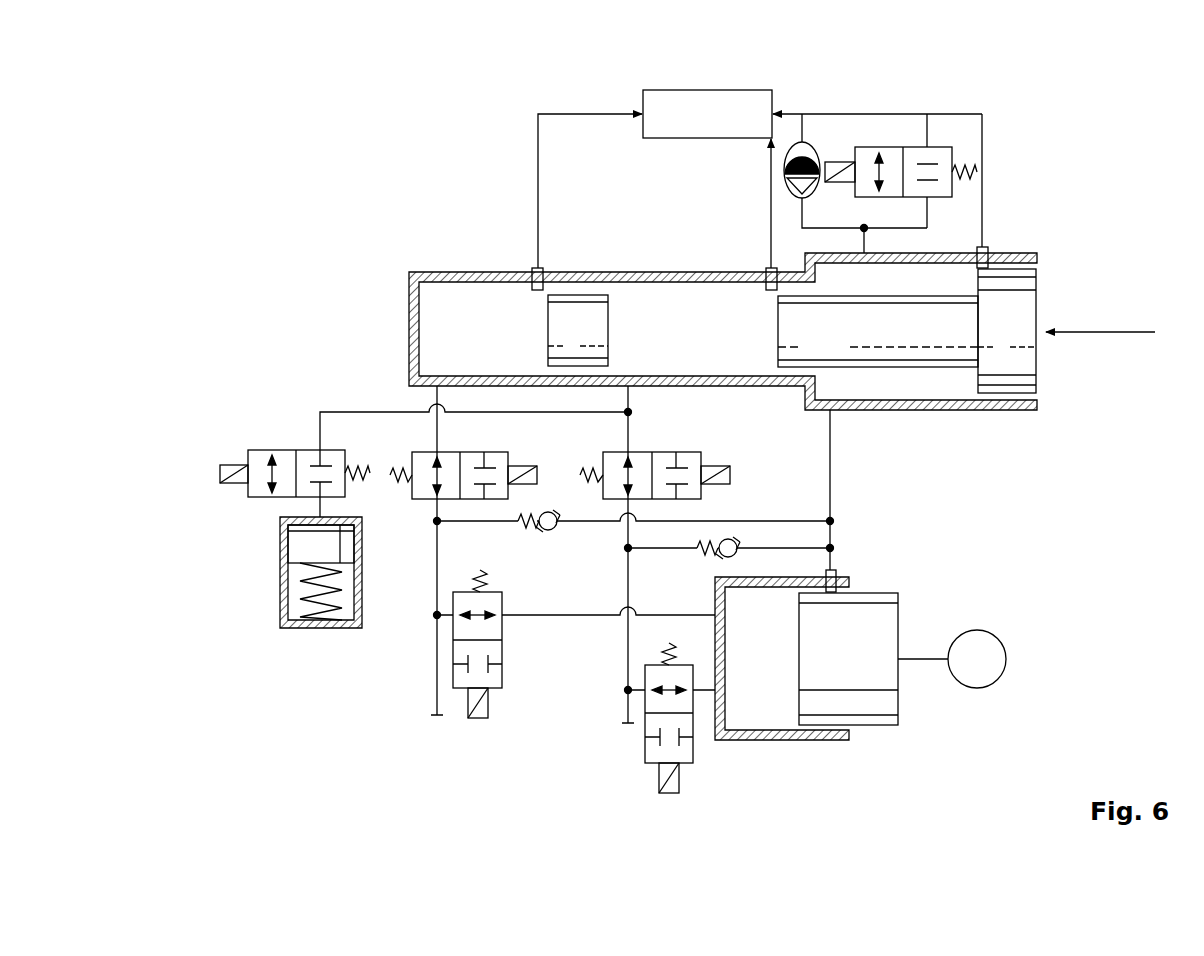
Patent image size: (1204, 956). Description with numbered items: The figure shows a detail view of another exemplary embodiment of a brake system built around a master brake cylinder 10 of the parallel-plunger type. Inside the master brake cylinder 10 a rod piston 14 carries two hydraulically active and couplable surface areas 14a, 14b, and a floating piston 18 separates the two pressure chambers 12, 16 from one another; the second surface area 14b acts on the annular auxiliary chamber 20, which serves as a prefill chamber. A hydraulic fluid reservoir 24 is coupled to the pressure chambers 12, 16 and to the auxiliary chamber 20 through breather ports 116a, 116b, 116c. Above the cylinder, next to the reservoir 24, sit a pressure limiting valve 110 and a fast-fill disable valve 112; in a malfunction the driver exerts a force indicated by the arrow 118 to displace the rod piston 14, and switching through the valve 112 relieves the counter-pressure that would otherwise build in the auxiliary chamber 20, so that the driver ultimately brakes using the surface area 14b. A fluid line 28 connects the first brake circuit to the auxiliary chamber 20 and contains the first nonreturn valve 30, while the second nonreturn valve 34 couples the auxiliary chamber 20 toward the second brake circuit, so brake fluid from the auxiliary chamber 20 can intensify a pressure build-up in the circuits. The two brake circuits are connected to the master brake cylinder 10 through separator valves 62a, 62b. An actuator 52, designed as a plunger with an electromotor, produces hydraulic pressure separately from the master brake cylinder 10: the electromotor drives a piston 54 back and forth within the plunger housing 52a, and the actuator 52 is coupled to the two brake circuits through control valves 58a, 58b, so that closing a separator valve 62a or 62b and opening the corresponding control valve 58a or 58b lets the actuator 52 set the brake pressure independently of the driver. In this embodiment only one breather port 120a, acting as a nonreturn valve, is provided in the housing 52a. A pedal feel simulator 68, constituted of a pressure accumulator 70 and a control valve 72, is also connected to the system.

The master brake cylinder 10 is at (445, 273).
The pressure chamber 12 is at (690, 286).
The rod piston 14 is at (1033, 303).
The hydraulically active surface area 14a is at (776, 368).
The second hydraulically active surface area 14b is at (965, 378).
The pressure chamber 16 is at (420, 333).
The floating piston 18 is at (585, 295).
The auxiliary chamber 20 is at (952, 264).
The hydraulic fluid reservoir 24 is at (705, 90).
The fluid line 28 is at (832, 472).
The first nonreturn valve 30 is at (738, 538).
The second nonreturn valve 34 is at (556, 529).
The actuator 52 is at (860, 686).
The plunger housing 52a is at (772, 742).
The piston 54 is at (898, 612).
The control valve 58a is at (645, 750).
The control valve 58b is at (503, 680).
The separator valve 62a is at (662, 452).
The separator valve 62b is at (476, 452).
The pedal feel simulator 68 is at (280, 548).
The pressure accumulator 70 is at (280, 591).
The control valve 72 is at (280, 450).
The pressure limiting valve 110 is at (812, 145).
The fast-fill disable valve 112 is at (883, 147).
The breather port 116a is at (530, 262).
The breather port 116b is at (766, 262).
The breather port 116c is at (990, 244).
The arrow 118 is at (1102, 333).
The breather port 120a is at (840, 572).